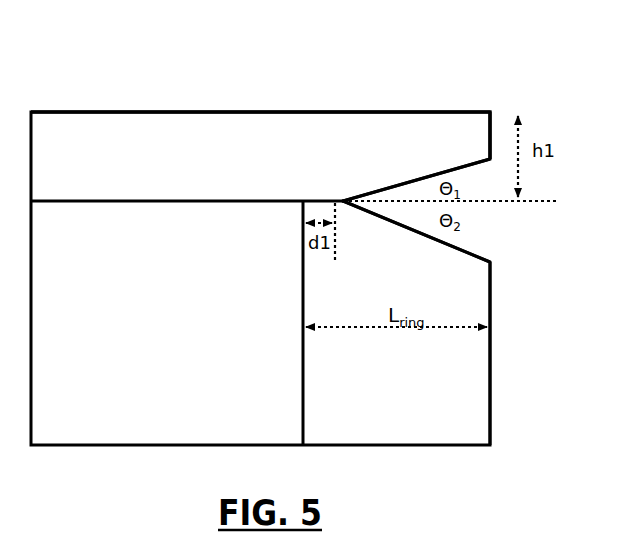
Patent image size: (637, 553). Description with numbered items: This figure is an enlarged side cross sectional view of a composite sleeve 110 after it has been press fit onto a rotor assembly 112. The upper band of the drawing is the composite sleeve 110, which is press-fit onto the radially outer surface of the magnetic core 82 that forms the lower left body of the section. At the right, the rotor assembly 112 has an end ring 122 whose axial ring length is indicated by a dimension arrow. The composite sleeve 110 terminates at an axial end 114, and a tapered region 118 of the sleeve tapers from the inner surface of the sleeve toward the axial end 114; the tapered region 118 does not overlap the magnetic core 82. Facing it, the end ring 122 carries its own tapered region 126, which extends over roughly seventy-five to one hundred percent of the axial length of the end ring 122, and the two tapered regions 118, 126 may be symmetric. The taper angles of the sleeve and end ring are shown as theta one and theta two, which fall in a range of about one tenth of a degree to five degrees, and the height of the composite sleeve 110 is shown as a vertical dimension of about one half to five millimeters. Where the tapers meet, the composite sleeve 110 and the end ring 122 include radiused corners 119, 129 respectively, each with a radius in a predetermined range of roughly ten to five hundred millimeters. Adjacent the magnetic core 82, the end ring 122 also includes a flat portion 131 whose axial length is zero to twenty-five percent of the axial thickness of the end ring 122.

The magnetic core 82 is at (181, 370).
The composite sleeve 110 is at (144, 111).
The rotor assembly 112 is at (316, 82).
The axial end 114 is at (492, 114).
The tapered region 118 is at (459, 166).
The radiused corner 119 is at (343, 201).
The end ring 122 is at (491, 302).
The tapered region 126 is at (463, 249).
The radiused corner 129 is at (343, 201).
The flat portion 131 is at (311, 202).